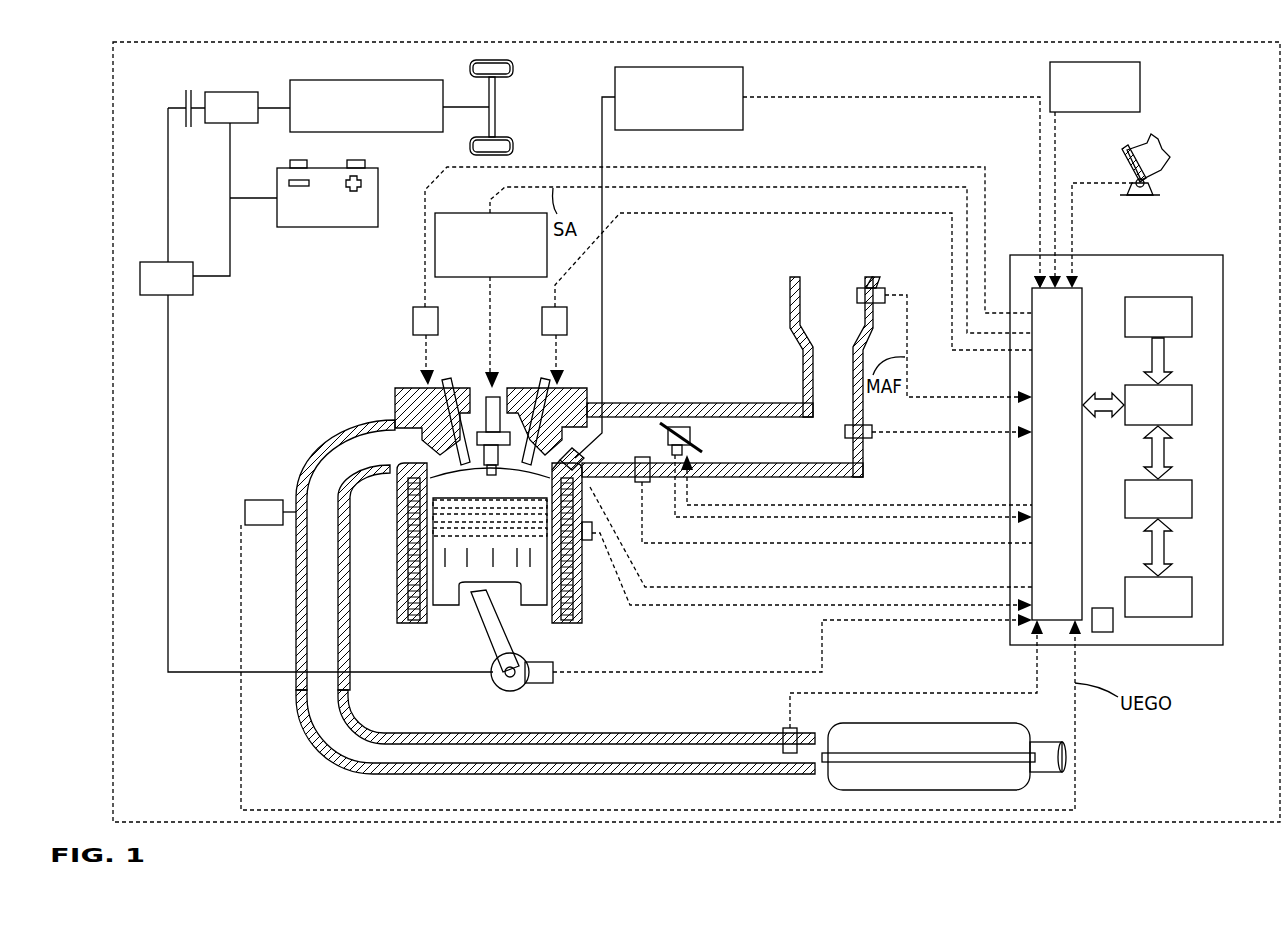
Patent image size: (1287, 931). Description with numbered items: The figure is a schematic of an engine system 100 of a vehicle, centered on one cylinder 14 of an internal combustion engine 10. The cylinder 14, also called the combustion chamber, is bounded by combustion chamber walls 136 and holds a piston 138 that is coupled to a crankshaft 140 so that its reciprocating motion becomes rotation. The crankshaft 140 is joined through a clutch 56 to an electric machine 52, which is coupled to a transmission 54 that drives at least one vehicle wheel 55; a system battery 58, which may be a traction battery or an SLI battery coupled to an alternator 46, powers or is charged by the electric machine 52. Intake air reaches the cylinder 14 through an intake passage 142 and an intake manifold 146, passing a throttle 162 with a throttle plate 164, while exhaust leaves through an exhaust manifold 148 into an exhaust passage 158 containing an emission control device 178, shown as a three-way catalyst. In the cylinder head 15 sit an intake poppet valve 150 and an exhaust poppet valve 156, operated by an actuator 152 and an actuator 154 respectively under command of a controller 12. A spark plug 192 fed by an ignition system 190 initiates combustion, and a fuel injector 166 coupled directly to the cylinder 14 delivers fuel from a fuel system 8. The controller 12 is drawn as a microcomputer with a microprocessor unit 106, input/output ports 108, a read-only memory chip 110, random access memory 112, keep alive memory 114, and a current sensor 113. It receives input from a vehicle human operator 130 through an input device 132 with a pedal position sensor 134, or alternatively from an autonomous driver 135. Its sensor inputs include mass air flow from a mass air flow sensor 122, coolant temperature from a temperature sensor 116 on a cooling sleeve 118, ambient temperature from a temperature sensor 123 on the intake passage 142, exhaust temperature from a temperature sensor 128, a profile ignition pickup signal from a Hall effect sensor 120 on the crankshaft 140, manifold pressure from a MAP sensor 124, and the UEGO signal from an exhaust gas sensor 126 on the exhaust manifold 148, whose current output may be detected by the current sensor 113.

The fuel system 8 is at (714, 67).
The internal combustion engine 10 is at (328, 342).
The controller 12 is at (1225, 262).
The cylinder 14 is at (403, 503).
The cylinder head 15 is at (400, 388).
The alternator 46 is at (150, 296).
The electric machine 52 is at (237, 92).
The transmission 54 is at (418, 132).
The vehicle wheel 55 is at (513, 145).
The clutch 56 is at (184, 92).
The system battery 58 is at (322, 227).
The engine system 100 is at (742, 261).
The microprocessor unit 106 is at (1195, 396).
The input/output ports 108 is at (1085, 296).
The read-only memory chip 110 is at (1195, 305).
The random access memory 112 is at (1195, 495).
The current sensor 113 is at (1105, 633).
The keep alive memory 114 is at (1195, 593).
The temperature sensor 116 is at (587, 542).
The cooling sleeve 118 is at (579, 560).
The Hall effect sensor 120 is at (545, 683).
The mass air flow sensor 122 is at (876, 288).
The temperature sensor 123 is at (866, 438).
The MAP sensor 124 is at (645, 482).
The exhaust gas sensor 126 is at (245, 508).
The temperature sensor 128 is at (788, 728).
The vehicle human operator 130 is at (1170, 155).
The input device 132 is at (1124, 162).
The pedal position sensor 134 is at (1150, 186).
The autonomous driver 135 is at (1095, 169).
The combustion chamber walls 136 is at (437, 607).
The piston 138 is at (473, 575).
The crankshaft 140 is at (500, 690).
The intake passage 142 is at (730, 377).
The intake manifold 146 is at (722, 451).
The exhaust manifold 148 is at (345, 555).
The intake poppet valve 150 is at (540, 392).
The actuator 152 is at (543, 318).
The actuator 154 is at (413, 316).
The exhaust poppet valve 156 is at (415, 445).
The exhaust passage 158 is at (605, 774).
The throttle 162 is at (697, 425).
The throttle plate 164 is at (665, 425).
The fuel injector 166 is at (568, 462).
The emission control device 178 is at (993, 736).
The ignition system 190 is at (452, 213).
The spark plug 192 is at (487, 400).